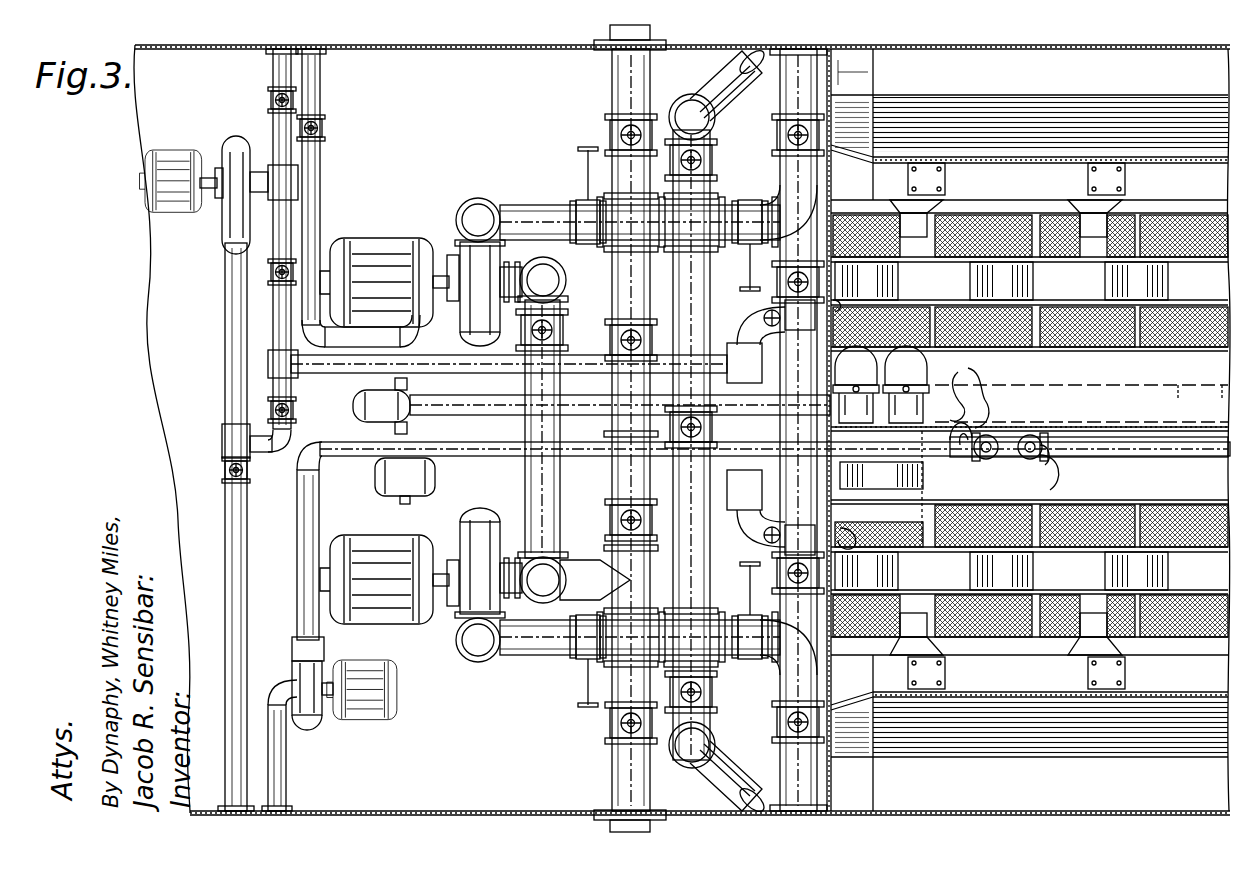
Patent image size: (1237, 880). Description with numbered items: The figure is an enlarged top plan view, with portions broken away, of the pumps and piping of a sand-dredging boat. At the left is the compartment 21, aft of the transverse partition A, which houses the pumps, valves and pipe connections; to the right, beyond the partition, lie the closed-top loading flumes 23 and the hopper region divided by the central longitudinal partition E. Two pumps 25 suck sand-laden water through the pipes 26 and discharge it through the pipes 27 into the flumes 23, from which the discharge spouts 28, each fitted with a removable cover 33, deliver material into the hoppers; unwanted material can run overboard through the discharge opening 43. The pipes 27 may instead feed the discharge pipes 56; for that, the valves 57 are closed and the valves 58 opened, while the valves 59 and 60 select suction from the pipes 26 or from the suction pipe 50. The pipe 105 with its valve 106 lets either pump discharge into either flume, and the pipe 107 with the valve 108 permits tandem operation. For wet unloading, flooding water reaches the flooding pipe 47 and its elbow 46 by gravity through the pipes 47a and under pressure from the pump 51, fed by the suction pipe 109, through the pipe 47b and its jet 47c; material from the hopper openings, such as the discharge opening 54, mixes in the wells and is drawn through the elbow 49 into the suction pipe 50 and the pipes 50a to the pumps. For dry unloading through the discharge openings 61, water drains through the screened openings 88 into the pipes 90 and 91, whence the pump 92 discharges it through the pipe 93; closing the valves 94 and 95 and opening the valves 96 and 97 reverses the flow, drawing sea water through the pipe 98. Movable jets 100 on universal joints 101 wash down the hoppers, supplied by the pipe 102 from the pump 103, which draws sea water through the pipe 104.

The compartment 21 is at (446, 125).
The loading flume 23 is at (1035, 178).
The pump 25 is at (470, 260).
The pipe 26 is at (612, 74).
The discharge pipe 27 is at (528, 207).
The discharge spout 28 is at (925, 215).
The removable cover 33 is at (1110, 174).
The discharge opening 43 is at (875, 82).
The elbow 46 is at (881, 351).
The flooding pipe 47 is at (1081, 388).
The pipe 47a is at (784, 105).
The pipe 47b is at (492, 403).
The jet or nozzle 47c is at (842, 496).
The elbow 49 is at (964, 387).
The suction pipe 50 is at (715, 375).
The pipe 50a is at (615, 318).
The pump 51 is at (360, 394).
The discharge opening 54 is at (606, 136).
The discharge pipe 56 is at (700, 85).
The valve 57 is at (748, 286).
The valve 58 is at (718, 160).
The valve 59 is at (606, 723).
The valve 60 is at (606, 340).
The discharge opening 61 is at (1020, 285).
The screened opening 88 is at (1193, 238).
The pipe 90 is at (838, 300).
The pipe 91 is at (580, 362).
The pump 92 is at (228, 152).
The pipe 93 is at (225, 516).
The valve 94 is at (222, 470).
The valve 95 is at (268, 272).
The valve 96 is at (268, 100).
The valve 97 is at (268, 408).
The pipe 98 is at (275, 116).
The movable jet 100 is at (978, 378).
The universal joint 101 is at (985, 408).
The pipe 102 is at (452, 456).
The pump 103 is at (295, 662).
The pipe 104 is at (288, 760).
The pipe 105 is at (695, 522).
The valve 106 is at (702, 440).
The pipe 107 is at (525, 499).
The valve 108 is at (520, 333).
The suction pipe 109 is at (320, 162).
The transverse partition A is at (853, 69).
The longitudinal partition E is at (1040, 440).